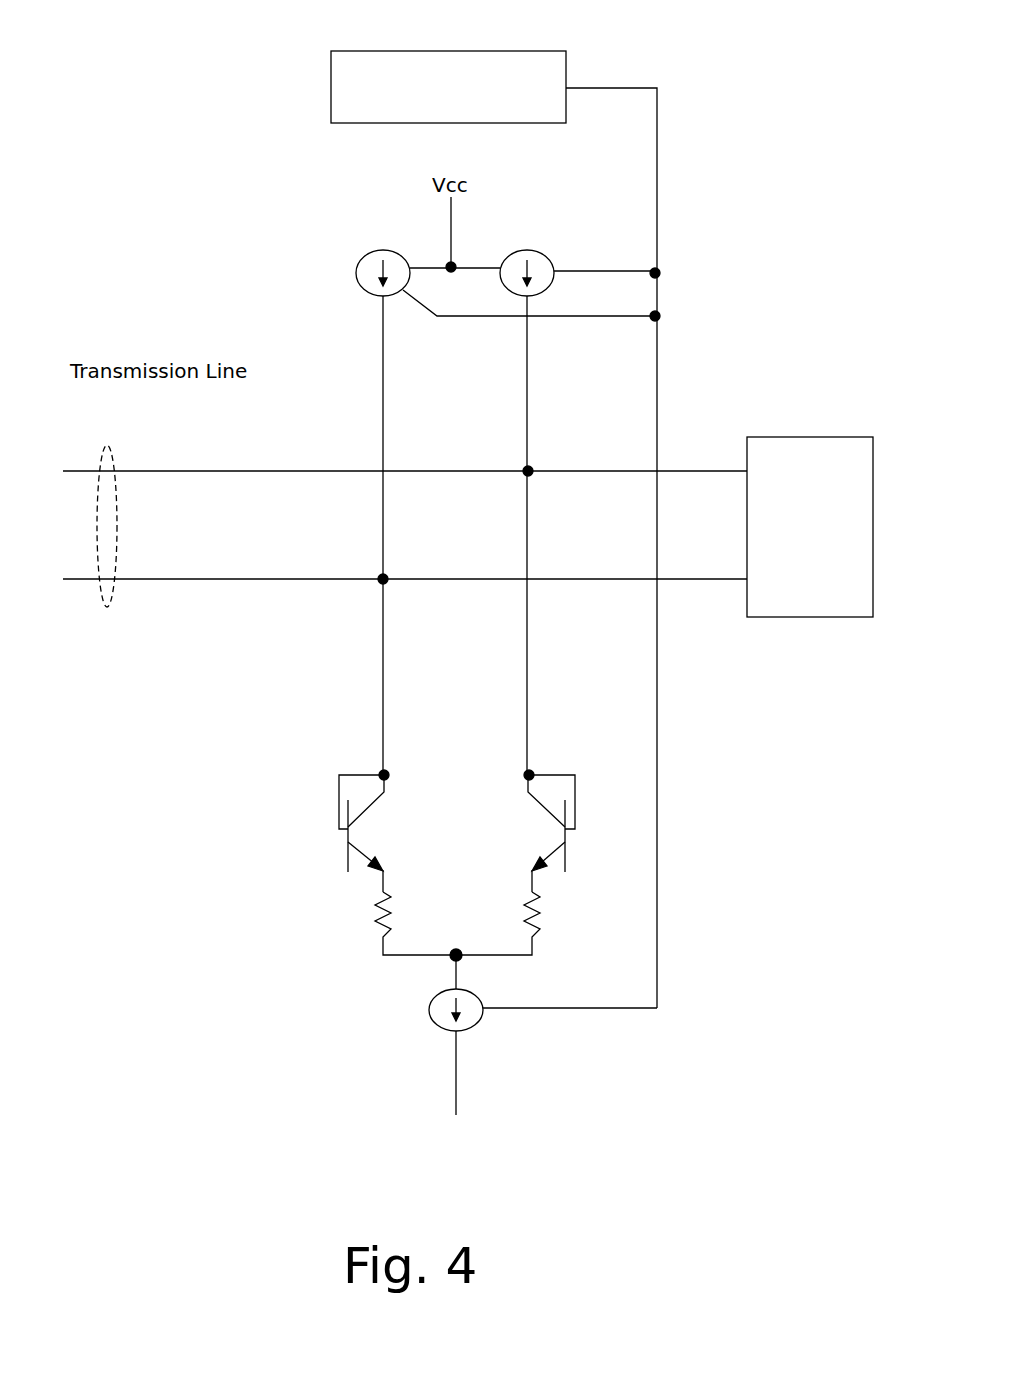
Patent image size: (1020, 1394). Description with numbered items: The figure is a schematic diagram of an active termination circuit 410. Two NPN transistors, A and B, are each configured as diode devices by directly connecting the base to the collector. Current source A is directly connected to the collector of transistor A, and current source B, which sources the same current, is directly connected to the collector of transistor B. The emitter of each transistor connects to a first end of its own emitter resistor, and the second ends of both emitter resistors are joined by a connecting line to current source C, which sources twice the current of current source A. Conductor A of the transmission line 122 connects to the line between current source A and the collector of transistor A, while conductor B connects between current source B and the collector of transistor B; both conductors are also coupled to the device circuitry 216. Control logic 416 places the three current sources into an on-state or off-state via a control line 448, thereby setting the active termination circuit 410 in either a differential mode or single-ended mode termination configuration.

The control logic 416 is at (548, 51).
The control line 448 is at (616, 88).
The transmission line 122 is at (108, 448).
The device circuitry 216 is at (830, 617).
The active termination circuit 410 is at (722, 1283).